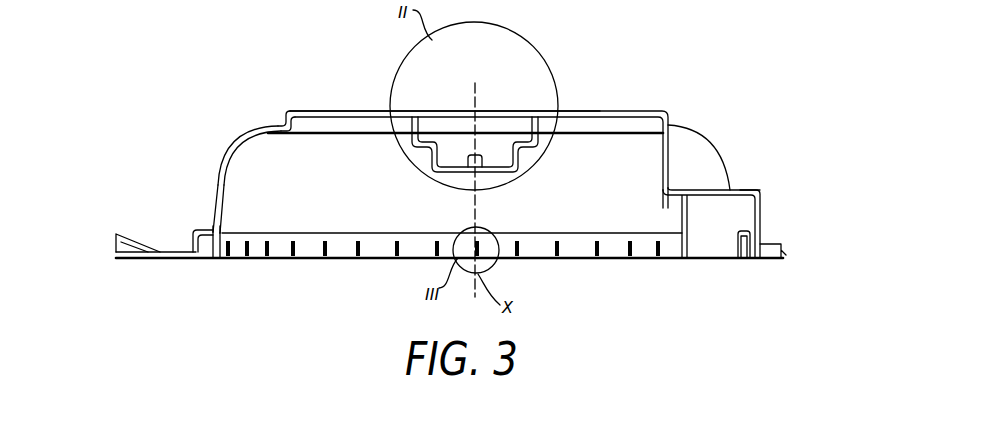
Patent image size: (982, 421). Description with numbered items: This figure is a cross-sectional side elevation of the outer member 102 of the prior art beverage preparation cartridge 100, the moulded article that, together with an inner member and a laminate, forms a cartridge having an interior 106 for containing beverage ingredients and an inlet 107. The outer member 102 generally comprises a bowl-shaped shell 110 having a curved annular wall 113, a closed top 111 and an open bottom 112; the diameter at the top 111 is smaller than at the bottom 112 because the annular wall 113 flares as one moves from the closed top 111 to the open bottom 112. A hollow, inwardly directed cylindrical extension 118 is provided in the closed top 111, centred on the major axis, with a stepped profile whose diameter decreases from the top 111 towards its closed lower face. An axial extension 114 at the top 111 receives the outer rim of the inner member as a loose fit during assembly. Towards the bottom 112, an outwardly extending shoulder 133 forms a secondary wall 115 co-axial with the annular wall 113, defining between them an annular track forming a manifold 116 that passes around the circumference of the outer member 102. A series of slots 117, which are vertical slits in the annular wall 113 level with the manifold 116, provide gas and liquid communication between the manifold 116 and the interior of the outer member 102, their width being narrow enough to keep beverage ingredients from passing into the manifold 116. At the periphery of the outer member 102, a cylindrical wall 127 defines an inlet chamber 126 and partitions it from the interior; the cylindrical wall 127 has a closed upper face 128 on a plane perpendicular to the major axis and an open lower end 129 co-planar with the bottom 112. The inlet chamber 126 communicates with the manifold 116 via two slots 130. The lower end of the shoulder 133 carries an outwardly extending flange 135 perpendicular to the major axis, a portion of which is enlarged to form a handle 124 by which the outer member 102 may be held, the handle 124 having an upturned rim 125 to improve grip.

The beverage preparation cartridge 100 is at (586, 86).
The outer member 102 is at (693, 109).
The interior 106 is at (310, 190).
The inlet 107 is at (702, 257).
The bowl-shaped shell 110 is at (222, 172).
The closed top 111 is at (350, 110).
The open bottom 112 is at (256, 266).
The curved annular wall 113 is at (241, 143).
The axial extension 114 is at (288, 122).
The secondary wall 115 is at (191, 240).
The manifold 116 is at (210, 250).
The slots 117 is at (560, 243).
The cylindrical extension 118 is at (515, 127).
The handle 124 is at (127, 259).
The upturned rim 125 is at (114, 243).
The inlet chamber 126 is at (745, 212).
The cylindrical wall 127 is at (680, 207).
The closed upper face 128 is at (742, 189).
The open lower end 129 is at (716, 257).
The slots 130 is at (739, 240).
The outwardly extending shoulder 133 is at (211, 232).
The outwardly extending flange 135 is at (769, 256).